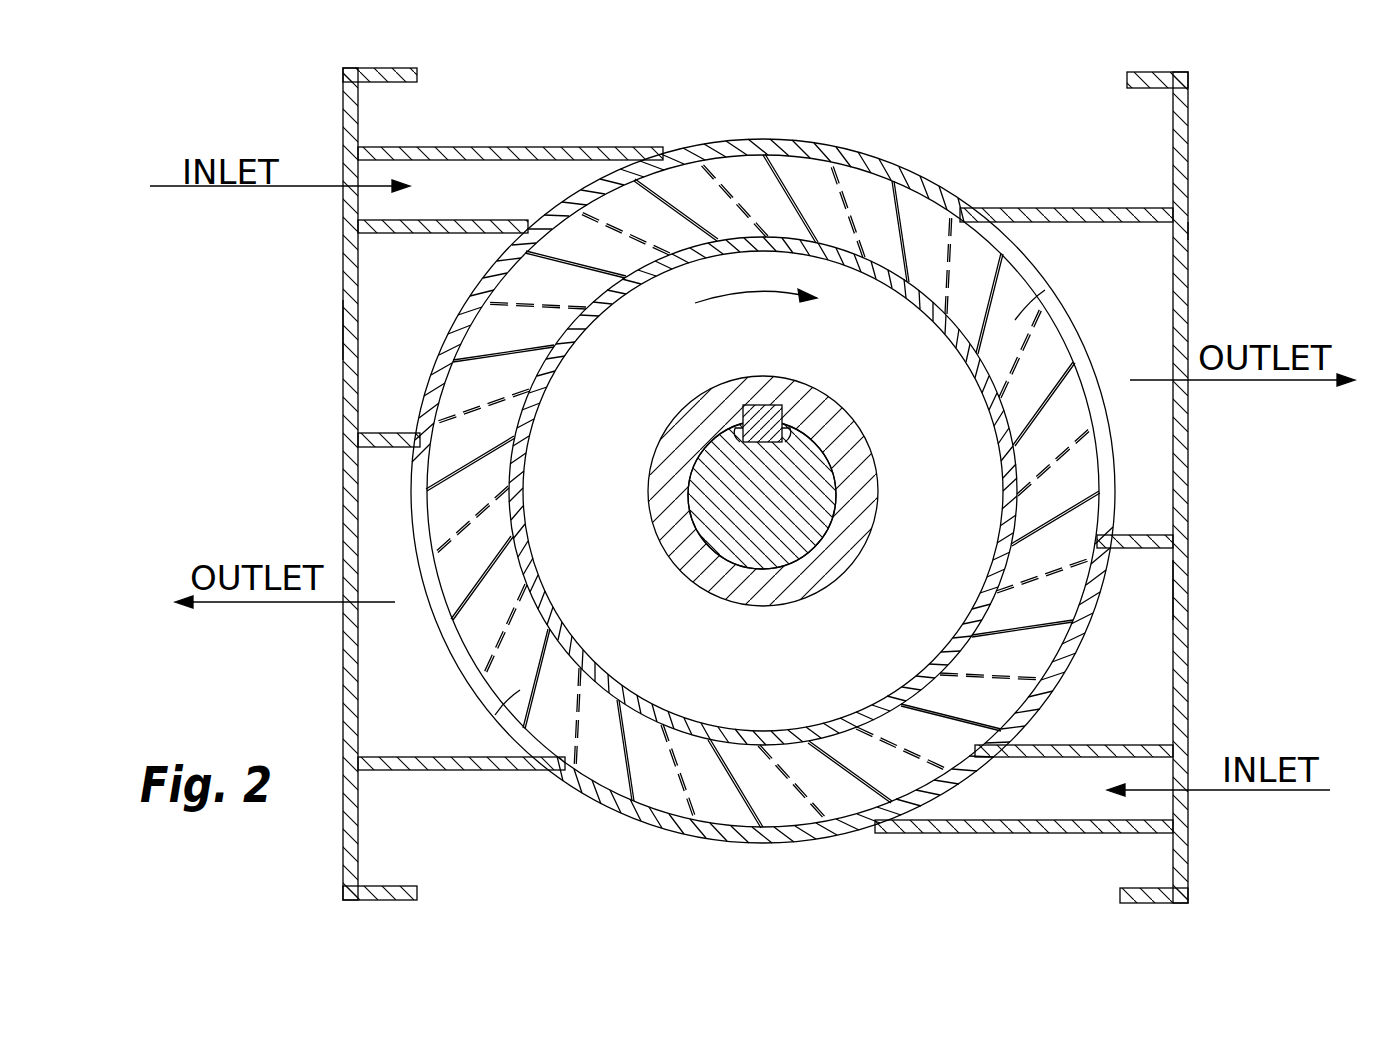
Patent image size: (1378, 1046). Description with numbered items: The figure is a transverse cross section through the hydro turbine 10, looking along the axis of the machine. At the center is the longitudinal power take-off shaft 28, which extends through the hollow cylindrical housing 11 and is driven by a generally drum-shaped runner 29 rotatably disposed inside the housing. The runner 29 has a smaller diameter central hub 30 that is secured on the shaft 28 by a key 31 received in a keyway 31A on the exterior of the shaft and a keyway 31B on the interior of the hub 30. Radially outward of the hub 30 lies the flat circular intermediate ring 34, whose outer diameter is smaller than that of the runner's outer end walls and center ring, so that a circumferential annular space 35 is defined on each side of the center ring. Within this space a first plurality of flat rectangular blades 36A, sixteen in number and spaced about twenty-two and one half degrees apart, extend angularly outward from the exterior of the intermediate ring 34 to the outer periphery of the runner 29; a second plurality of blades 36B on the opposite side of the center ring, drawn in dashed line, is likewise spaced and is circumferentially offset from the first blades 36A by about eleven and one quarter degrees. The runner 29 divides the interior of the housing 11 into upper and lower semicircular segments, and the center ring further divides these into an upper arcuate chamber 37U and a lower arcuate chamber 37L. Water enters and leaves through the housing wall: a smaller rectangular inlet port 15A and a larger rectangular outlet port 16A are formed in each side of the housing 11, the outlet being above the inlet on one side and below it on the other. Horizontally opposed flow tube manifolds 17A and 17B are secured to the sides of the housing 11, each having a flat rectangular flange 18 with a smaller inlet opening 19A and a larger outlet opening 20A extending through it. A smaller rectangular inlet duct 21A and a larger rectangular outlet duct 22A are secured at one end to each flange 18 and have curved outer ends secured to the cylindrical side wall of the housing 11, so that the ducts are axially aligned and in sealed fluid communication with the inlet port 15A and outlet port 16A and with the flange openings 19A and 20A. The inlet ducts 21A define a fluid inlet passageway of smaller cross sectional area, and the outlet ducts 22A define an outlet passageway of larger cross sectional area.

The hydro turbine 10 is at (763, 434).
The hollow cylindrical housing 11 is at (818, 152).
The inlet port 15A is at (570, 208).
The outlet port 16A is at (1090, 362).
The flow tube manifold 17A is at (1190, 165).
The flow tube manifold 17B is at (342, 123).
The flange 18 is at (345, 330).
The inlet opening 19A is at (1182, 766).
The outlet opening 20A is at (1188, 224).
The inlet duct 21A is at (410, 147).
The outlet duct 22A is at (1062, 208).
The power take-off shaft 28 is at (825, 488).
The runner 29 is at (1033, 360).
The central hub 30 is at (850, 538).
The key 31 is at (755, 388).
The keyway 31A is at (805, 425).
The keyway 31B is at (732, 425).
The intermediate ring 34 is at (625, 293).
The circumferential annular space 35 is at (1022, 290).
The first plurality of blades 36A is at (668, 188).
The second plurality of blades 36B is at (622, 215).
The upper arcuate chamber 37U is at (785, 205).
The lower arcuate chamber 37L is at (792, 807).